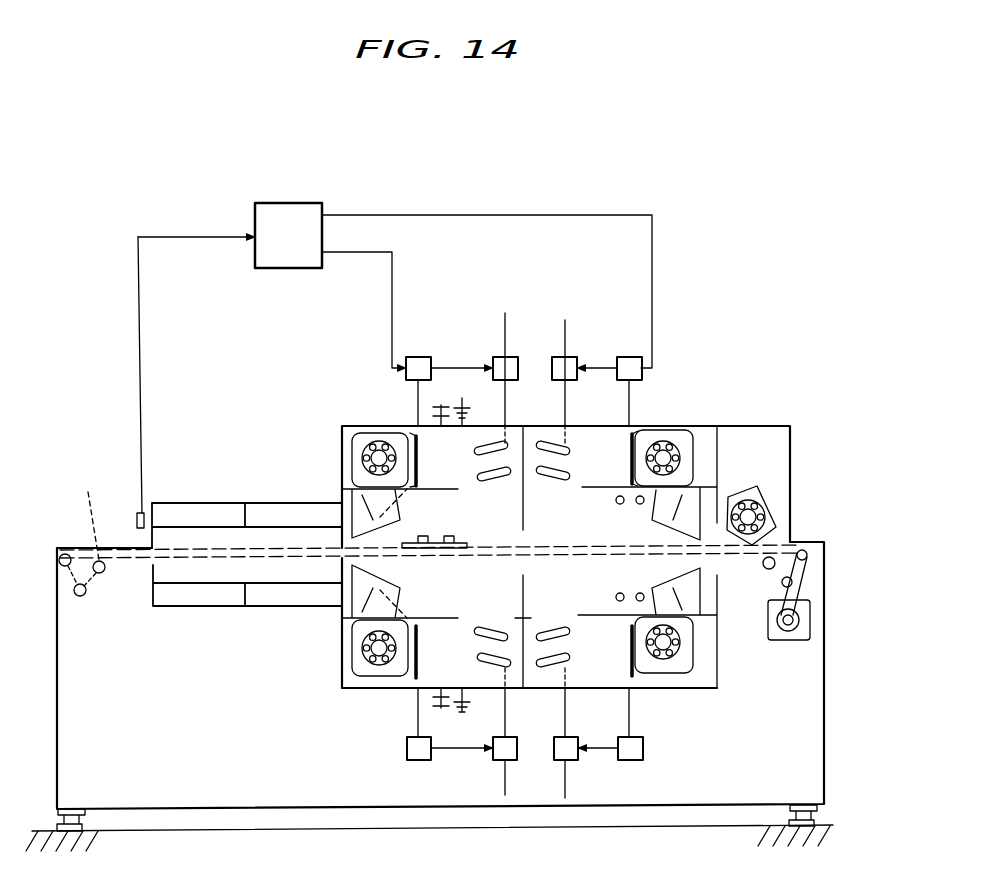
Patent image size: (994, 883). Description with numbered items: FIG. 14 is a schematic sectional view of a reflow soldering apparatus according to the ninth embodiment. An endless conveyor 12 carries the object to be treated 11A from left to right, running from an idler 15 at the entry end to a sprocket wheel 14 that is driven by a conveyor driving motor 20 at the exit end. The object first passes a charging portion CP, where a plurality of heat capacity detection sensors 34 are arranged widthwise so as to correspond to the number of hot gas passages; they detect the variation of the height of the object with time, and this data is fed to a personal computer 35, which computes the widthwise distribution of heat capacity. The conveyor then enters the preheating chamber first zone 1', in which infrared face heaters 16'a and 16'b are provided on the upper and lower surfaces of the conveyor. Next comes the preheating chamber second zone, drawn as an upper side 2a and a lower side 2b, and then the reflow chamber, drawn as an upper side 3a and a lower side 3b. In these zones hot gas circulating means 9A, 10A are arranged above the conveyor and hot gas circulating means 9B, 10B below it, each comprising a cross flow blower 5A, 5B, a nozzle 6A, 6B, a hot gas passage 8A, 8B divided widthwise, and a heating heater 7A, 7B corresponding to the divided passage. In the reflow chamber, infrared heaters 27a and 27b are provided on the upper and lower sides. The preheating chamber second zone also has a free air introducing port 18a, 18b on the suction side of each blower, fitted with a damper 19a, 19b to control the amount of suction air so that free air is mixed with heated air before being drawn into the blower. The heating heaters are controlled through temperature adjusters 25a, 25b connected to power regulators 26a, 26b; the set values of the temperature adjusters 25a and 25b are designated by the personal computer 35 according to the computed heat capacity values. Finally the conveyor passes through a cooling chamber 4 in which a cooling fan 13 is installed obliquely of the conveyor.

The sprocket wheel 14 is at (818, 540).
The personal computer 35 is at (255, 260).
The charging portion CP is at (130, 528).
The heat capacity detection sensors 34 is at (136, 513).
The infrared face heater 16'a is at (247, 495).
The infrared face heater 16'b is at (247, 613).
The preheating chamber first zone 1' is at (247, 471).
The idler 15 is at (65, 554).
The conveyor 12 is at (86, 512).
The cooling chamber 4 is at (790, 430).
The preheating chamber second zone (upper side) 2a is at (342, 440).
The preheating chamber second zone (lower side) 2b is at (342, 640).
The reflow chamber (upper side) 3a is at (703, 425).
The reflow chamber (lower side) 3b is at (717, 660).
The nozzle 6A is at (365, 433).
The nozzle 6B is at (323, 680).
The cross flow blower 5A is at (366, 432).
The cross flow blower 5B is at (363, 690).
The hot gas passage 8A is at (413, 436).
The hot gas passage 8B is at (413, 678).
The heating heater 7A is at (475, 450).
The heating heater 7B is at (475, 657).
The object to be treated 11A is at (462, 543).
The infrared heater 27a is at (616, 503).
The infrared heater 27b is at (616, 597).
The cooling fan 13 is at (767, 497).
The conveyor driving motor 20 is at (790, 640).
The temperature adjuster 25a is at (418, 356).
The power regulator 26a is at (560, 356).
The free air introducing port 18a is at (441, 405).
The damper 19a is at (465, 398).
The temperature adjuster 25b is at (416, 762).
The power regulator 26b is at (567, 767).
The free air introducing port 18b is at (443, 708).
The damper 19b is at (477, 712).
The hot gas circulating means 9A is at (383, 347).
The hot gas circulating means 10A is at (767, 334).
The hot gas circulating means 9B is at (402, 752).
The hot gas circulating means 10B is at (775, 760).